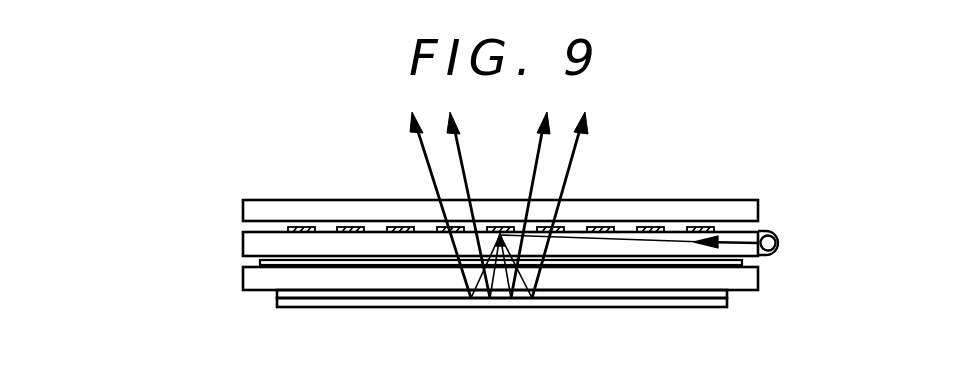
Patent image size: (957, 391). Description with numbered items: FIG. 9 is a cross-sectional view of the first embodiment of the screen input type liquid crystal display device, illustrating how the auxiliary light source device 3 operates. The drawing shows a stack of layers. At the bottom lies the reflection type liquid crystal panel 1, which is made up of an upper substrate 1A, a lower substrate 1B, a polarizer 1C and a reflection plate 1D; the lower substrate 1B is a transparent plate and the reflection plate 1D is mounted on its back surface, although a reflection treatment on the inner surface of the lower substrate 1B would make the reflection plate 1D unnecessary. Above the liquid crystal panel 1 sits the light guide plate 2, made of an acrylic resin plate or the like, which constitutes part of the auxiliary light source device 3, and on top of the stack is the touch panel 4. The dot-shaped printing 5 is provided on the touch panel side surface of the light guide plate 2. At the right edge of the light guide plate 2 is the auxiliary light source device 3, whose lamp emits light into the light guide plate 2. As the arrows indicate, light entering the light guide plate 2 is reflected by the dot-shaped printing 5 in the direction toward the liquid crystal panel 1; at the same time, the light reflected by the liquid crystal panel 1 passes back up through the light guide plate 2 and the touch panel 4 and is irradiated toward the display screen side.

The liquid crystal panel 1 is at (440, 325).
The upper substrate 1A is at (243, 275).
The lower substrate 1B is at (277, 293).
The polarizer 1C is at (318, 262).
The reflection plate 1D is at (340, 307).
The light guide plate 2 is at (242, 247).
The auxiliary light source device 3 is at (793, 240).
The touch panel 4 is at (242, 215).
The dot-shaped printing 5 is at (297, 227).